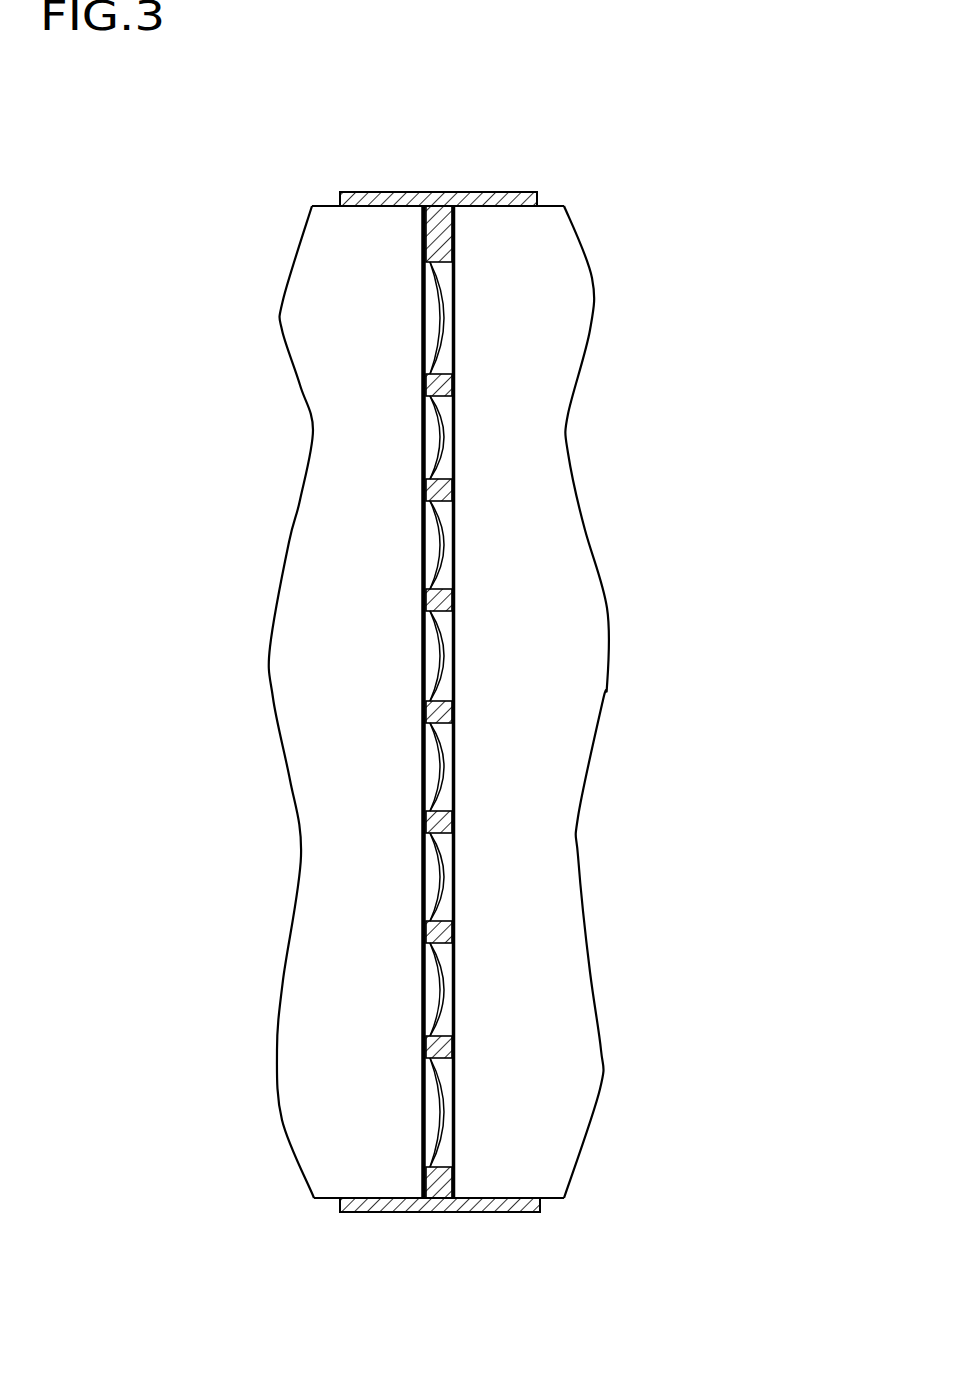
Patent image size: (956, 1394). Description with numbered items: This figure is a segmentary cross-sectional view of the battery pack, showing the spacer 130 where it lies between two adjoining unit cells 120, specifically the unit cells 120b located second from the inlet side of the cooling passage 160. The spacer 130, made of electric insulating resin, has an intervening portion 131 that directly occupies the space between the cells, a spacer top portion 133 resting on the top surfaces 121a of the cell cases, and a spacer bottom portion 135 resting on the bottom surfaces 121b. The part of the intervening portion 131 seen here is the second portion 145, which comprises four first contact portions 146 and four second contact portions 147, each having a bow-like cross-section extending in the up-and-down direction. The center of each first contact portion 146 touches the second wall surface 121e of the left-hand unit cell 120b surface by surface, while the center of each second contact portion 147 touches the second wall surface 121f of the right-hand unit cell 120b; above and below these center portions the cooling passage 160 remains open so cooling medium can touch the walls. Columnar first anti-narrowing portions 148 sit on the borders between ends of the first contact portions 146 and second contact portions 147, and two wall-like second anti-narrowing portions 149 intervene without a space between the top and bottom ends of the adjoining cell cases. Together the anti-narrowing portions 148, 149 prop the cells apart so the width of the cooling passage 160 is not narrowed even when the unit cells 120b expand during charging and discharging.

The unit cell 120 is at (300, 667).
The unit cell at the second place from the inlet side 120b is at (585, 682).
The top surface 121a is at (326, 200).
The bottom surface 121b is at (327, 1210).
The second side surface 121e is at (424, 986).
The second side surface 121f is at (440, 1106).
The spacer 130 is at (497, 193).
The intervening portion 131 is at (455, 984).
The spacer top portion 133 is at (377, 192).
The spacer bottom portion 135 is at (367, 1212).
The second portion 145 is at (437, 1112).
The first contact portion 146 is at (425, 680).
The second contact portion 147 is at (455, 747).
The first anti-narrowing portion 148 is at (455, 902).
The second anti-narrowing portion 149 is at (455, 217).
The cooling passage 160 is at (443, 297).